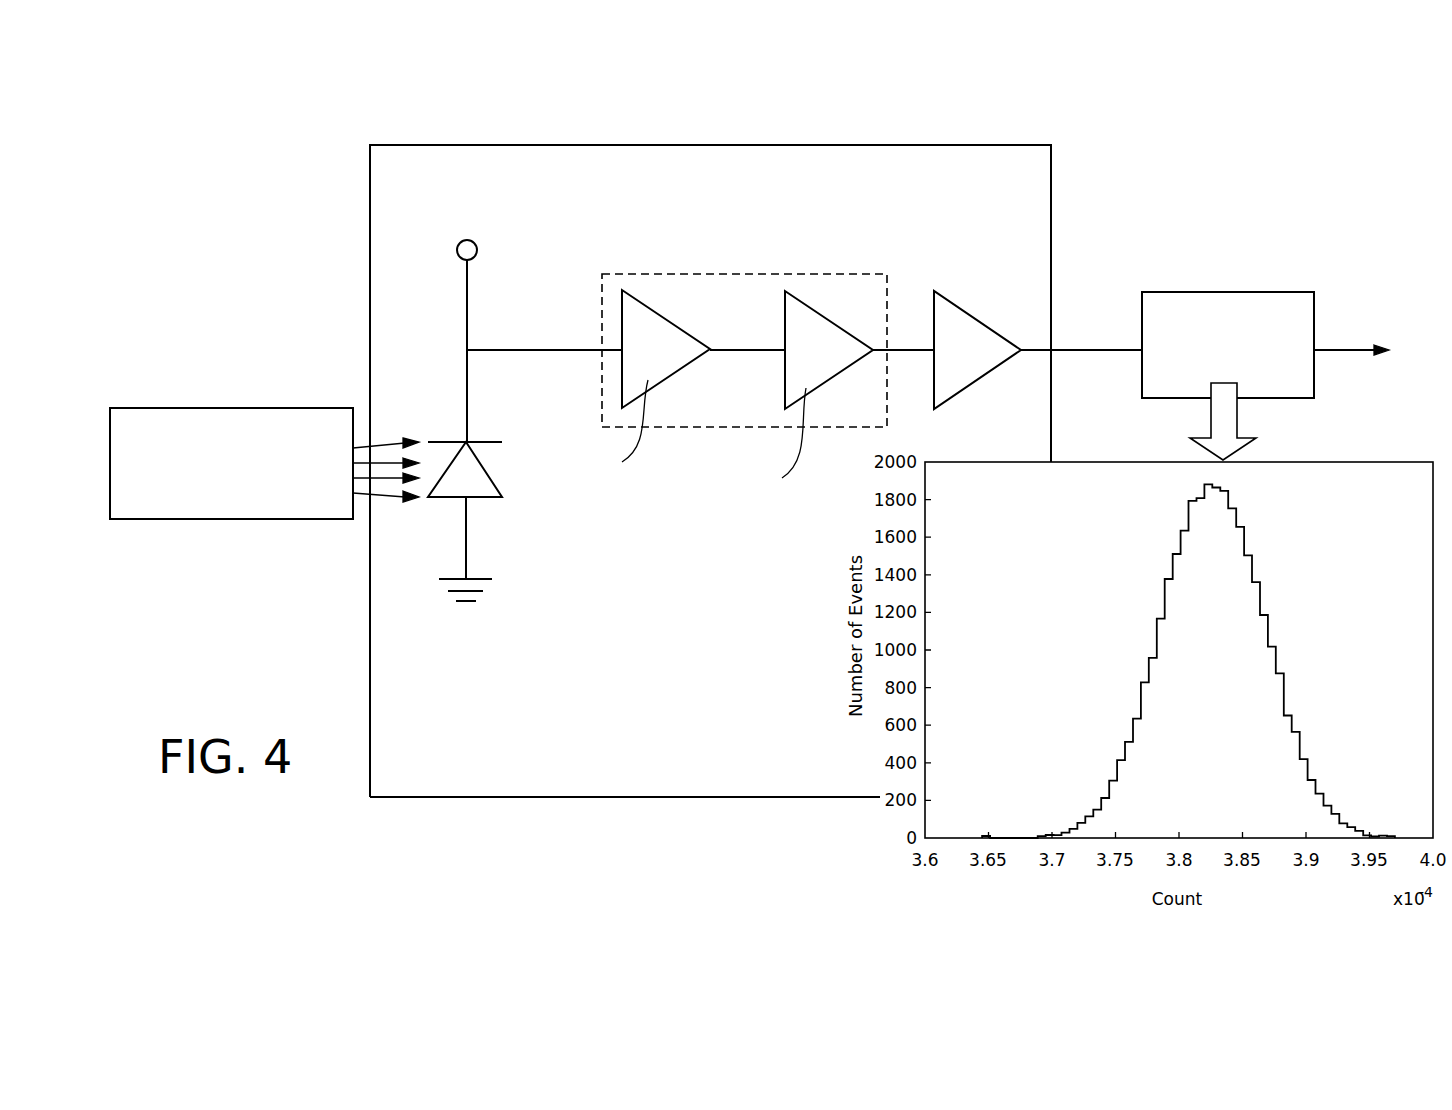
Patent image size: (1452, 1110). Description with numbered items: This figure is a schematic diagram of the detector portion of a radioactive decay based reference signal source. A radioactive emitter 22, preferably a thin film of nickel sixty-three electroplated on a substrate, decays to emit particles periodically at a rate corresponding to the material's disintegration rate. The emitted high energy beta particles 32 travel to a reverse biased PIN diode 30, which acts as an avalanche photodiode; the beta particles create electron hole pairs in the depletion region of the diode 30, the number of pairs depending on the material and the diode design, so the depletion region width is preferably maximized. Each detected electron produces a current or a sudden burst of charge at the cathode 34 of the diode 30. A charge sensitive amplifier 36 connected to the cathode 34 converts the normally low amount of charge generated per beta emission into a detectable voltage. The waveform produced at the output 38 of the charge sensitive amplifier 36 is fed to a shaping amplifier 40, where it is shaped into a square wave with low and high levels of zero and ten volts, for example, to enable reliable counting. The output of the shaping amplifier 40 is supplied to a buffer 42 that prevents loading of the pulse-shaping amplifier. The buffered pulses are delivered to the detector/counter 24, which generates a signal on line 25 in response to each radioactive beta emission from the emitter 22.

The radioactive emitter 22 is at (226, 408).
The PIN diode 30 is at (408, 408).
The beta particles 32 is at (404, 503).
The cathode 34 is at (466, 388).
The charge sensitive amplifier 36 is at (640, 320).
The output of the charge sensitive amplifier 38 is at (738, 348).
The shaping amplifier 40 is at (828, 325).
The buffer 42 is at (1000, 345).
The detector/counter 24 is at (1148, 312).
The line 25 is at (1355, 345).